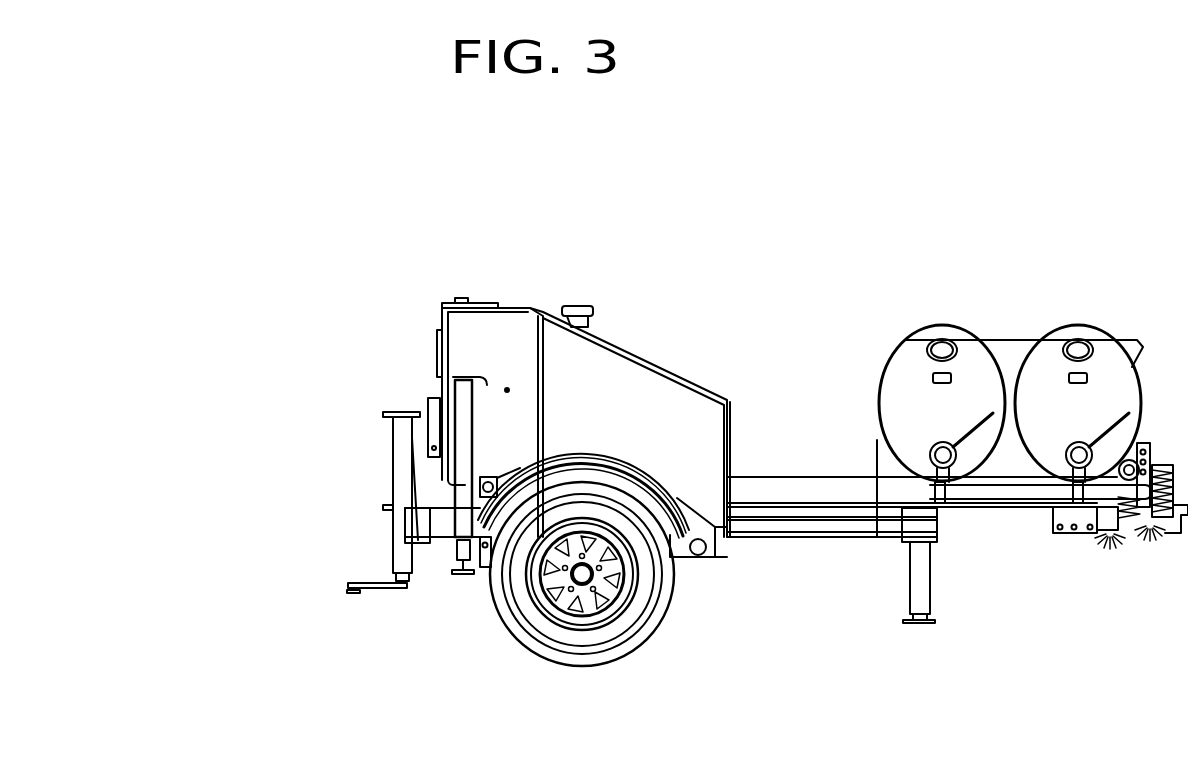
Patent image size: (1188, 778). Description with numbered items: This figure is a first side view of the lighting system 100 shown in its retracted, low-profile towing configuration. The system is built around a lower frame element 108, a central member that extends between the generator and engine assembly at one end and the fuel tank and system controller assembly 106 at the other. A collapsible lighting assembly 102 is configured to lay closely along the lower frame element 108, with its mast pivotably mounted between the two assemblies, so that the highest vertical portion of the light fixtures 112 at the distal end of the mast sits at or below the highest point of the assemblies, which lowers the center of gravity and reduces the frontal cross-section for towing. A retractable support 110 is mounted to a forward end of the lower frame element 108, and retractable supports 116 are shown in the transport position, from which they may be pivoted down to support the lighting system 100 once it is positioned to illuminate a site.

The lighting system 100 is at (655, 283).
The collapsible lighting assembly 102 is at (803, 490).
The fuel tank and system controller assembly 106 is at (508, 348).
The lower frame element 108 is at (816, 527).
The retractable support 110 is at (923, 593).
The light fixtures 112 is at (963, 395).
The retractable support 116 is at (460, 426).